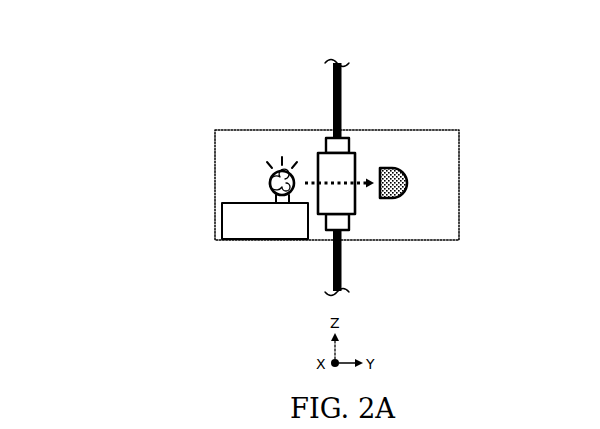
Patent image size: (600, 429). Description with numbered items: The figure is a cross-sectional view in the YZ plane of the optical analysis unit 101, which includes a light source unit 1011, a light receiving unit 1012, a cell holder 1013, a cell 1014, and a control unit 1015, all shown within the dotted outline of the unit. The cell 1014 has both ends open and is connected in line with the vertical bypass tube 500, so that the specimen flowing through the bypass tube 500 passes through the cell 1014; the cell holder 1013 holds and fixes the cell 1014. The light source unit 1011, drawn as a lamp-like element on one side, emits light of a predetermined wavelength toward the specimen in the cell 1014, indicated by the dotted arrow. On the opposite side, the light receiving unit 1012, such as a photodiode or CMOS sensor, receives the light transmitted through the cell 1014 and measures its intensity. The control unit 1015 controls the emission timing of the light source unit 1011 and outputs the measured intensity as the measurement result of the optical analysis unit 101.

The optical analysis unit 101 is at (218, 241).
The bypass tube 500 is at (342, 111).
The light source unit 1011 is at (270, 185).
The light receiving unit 1012 is at (405, 189).
The cell holder 1013 is at (357, 207).
The cell 1014 is at (325, 140).
The control unit 1015 is at (278, 240).